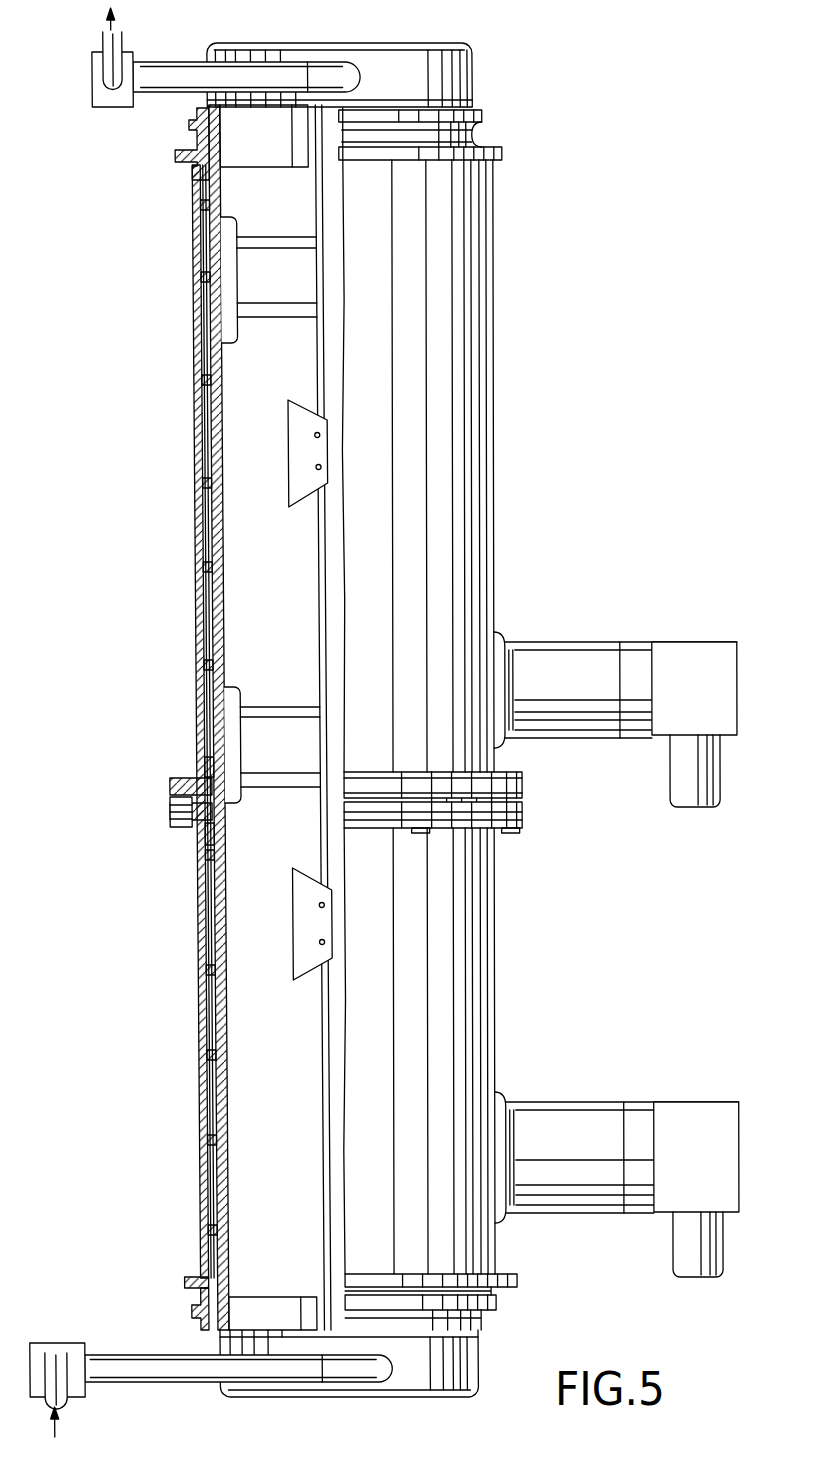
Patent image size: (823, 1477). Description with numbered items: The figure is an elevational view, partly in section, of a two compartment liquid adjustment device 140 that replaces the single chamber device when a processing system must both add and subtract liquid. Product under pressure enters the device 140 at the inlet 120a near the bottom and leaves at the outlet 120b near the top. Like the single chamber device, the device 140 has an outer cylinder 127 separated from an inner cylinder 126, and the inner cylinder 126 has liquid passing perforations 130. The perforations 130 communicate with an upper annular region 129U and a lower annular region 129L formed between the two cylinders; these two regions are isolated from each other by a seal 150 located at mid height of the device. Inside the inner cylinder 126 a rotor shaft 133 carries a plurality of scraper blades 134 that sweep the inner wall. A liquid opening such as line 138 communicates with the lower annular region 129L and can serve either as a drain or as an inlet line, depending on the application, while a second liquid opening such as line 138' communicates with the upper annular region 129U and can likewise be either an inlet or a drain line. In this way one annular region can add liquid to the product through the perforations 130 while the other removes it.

The inlet 120a is at (128, 1385).
The outlet 120b is at (160, 95).
The inner cylinder 126 is at (228, 1068).
The outer cylinder 127 is at (200, 1083).
The upper annular region 129U is at (208, 565).
The lower annular region 129L is at (208, 975).
The liquid passing perforations 130 is at (228, 1135).
The rotor shaft 133 is at (316, 823).
The scraper blades 134 is at (288, 424).
The line 138 is at (617, 1186).
The line 138' is at (615, 719).
The adjustment device 140 is at (145, 633).
The seal 150 is at (522, 786).